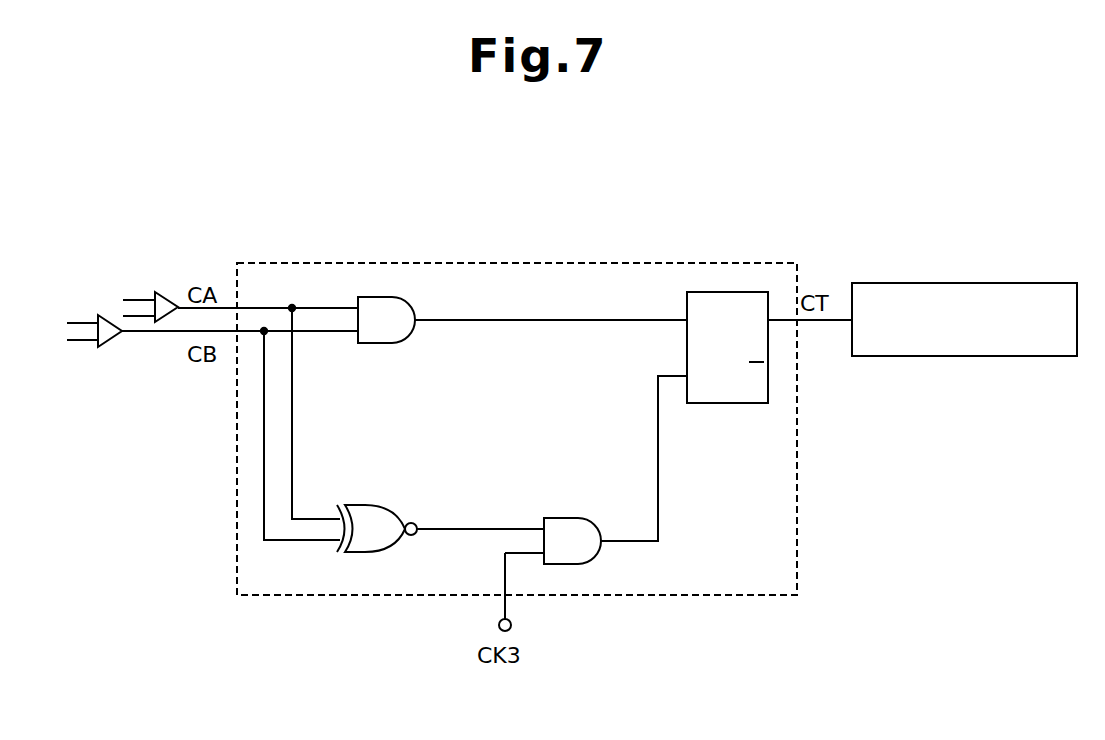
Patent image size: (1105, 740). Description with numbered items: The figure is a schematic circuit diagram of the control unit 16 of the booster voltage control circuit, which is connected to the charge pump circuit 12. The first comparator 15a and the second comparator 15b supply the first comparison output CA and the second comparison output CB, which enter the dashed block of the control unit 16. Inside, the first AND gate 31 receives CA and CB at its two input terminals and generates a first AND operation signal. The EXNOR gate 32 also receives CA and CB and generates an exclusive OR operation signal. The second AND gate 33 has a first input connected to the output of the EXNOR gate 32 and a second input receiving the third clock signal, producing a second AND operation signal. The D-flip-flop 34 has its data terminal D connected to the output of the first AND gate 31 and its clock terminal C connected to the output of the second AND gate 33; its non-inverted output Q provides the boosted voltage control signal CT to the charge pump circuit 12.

The charge pump circuit 12 is at (1048, 283).
The first comparator 15a is at (175, 292).
The second comparator 15b is at (113, 348).
The control unit 16 is at (748, 596).
The first AND gate 31 is at (413, 345).
The EXNOR gate 32 is at (378, 505).
The second AND gate 33 is at (560, 516).
The D-flip-flop 34 is at (740, 403).